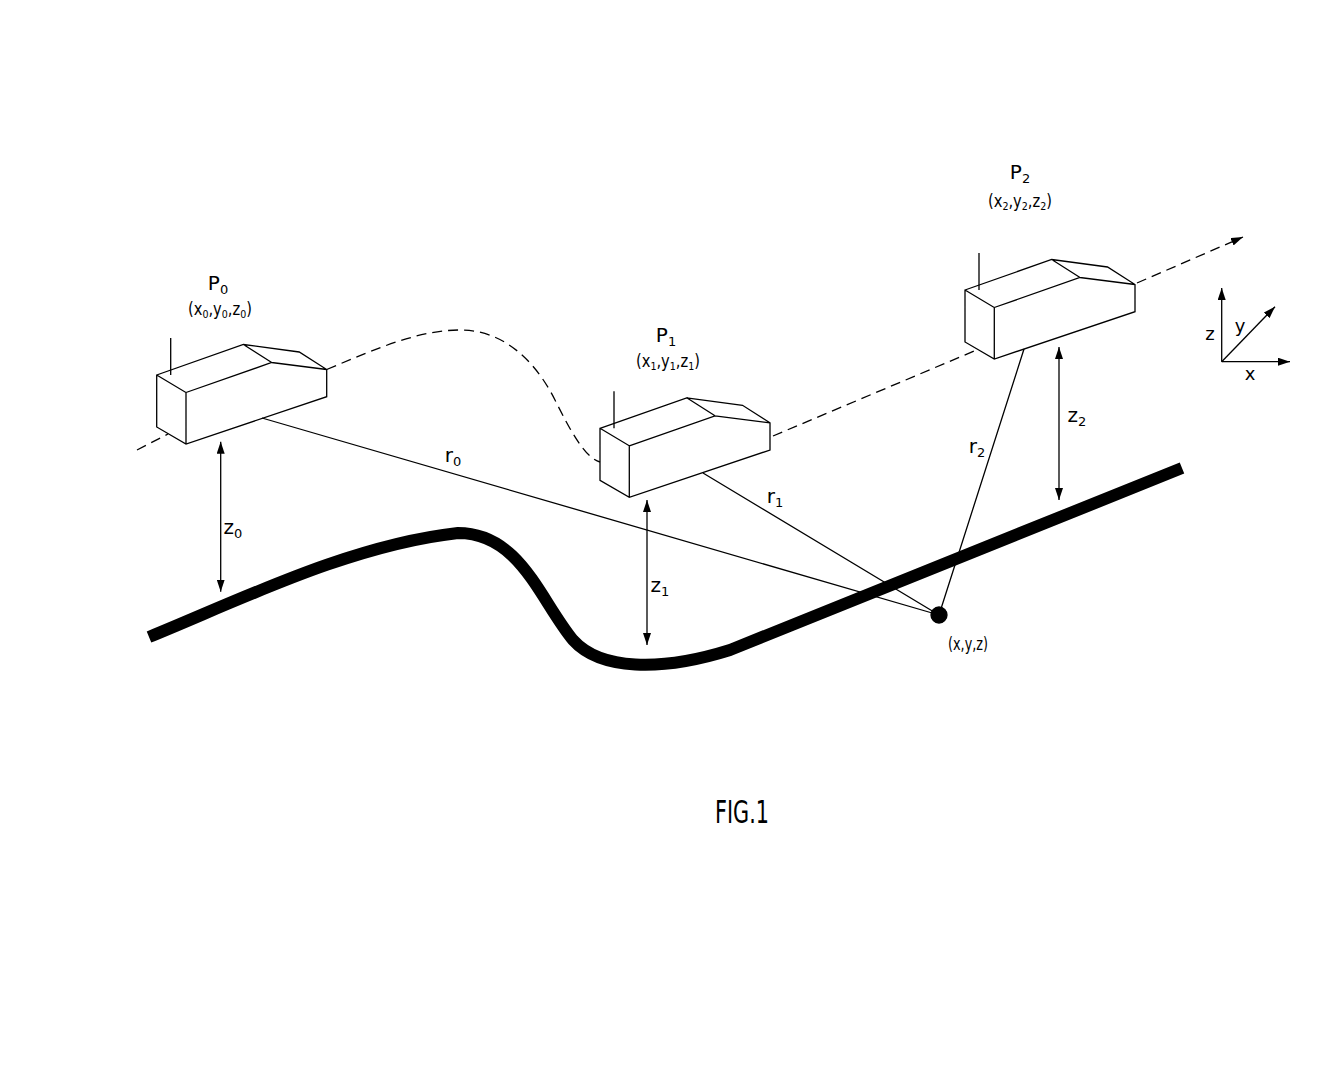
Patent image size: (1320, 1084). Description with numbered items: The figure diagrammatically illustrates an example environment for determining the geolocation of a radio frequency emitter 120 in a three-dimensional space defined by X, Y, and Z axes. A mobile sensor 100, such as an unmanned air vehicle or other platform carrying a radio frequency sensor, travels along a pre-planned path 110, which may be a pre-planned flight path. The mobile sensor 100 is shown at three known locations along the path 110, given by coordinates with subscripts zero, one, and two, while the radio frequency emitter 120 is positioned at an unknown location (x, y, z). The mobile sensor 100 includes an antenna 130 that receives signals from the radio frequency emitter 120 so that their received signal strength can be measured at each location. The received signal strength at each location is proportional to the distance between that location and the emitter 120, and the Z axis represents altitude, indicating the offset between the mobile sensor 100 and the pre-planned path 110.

The mobile sensor 100 is at (157, 375).
The pre-planned path 110 is at (1105, 508).
The radio frequency (RF) emitter 120 is at (947, 614).
The antenna 130 is at (171, 350).